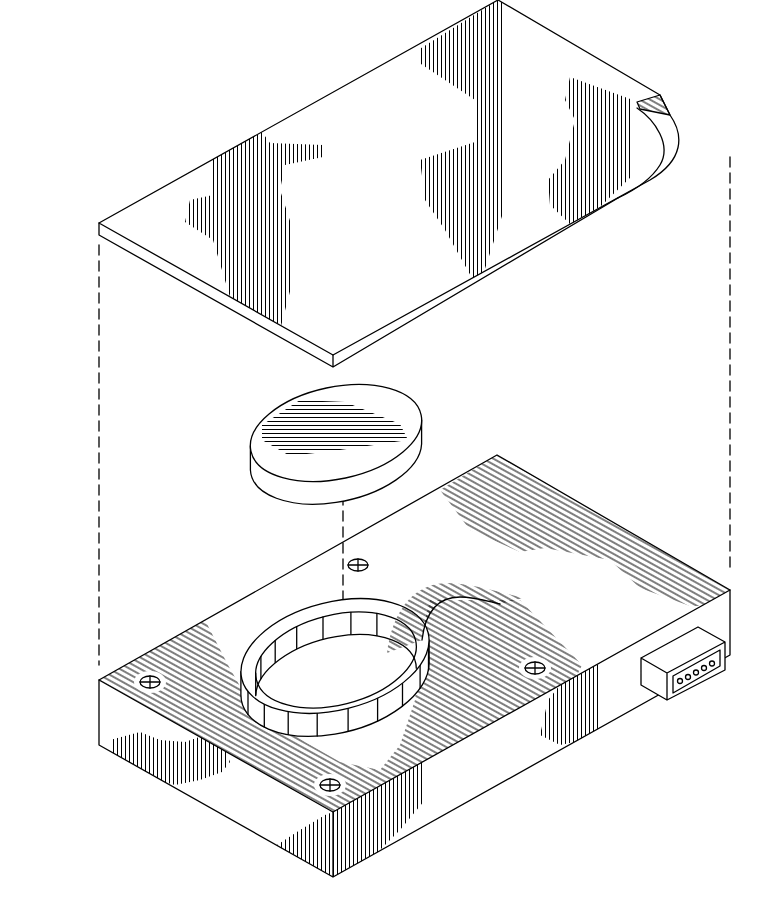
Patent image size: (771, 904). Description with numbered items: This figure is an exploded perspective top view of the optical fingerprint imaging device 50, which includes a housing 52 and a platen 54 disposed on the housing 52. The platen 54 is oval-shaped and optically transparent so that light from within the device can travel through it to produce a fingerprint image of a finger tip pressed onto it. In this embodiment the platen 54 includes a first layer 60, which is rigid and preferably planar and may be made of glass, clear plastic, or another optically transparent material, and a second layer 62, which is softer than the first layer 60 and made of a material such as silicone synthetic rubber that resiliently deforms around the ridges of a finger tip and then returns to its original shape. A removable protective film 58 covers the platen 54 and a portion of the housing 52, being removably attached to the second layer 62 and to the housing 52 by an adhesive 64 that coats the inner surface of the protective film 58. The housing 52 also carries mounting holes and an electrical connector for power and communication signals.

The optical fingerprint imaging device 50 is at (105, 95).
The housing 52 is at (225, 783).
The platen 54 is at (258, 552).
The protective film 58 is at (300, 133).
The first layer 60 is at (387, 653).
The second layer 62 is at (367, 404).
The adhesive 64 is at (668, 104).